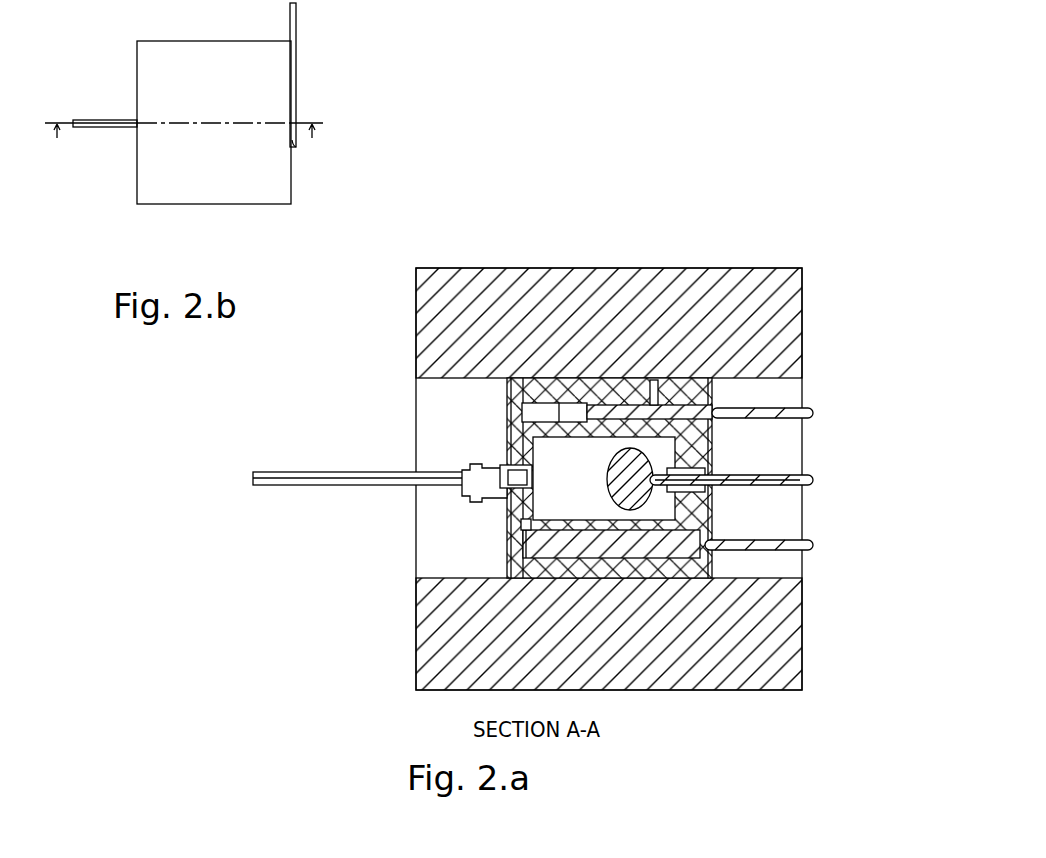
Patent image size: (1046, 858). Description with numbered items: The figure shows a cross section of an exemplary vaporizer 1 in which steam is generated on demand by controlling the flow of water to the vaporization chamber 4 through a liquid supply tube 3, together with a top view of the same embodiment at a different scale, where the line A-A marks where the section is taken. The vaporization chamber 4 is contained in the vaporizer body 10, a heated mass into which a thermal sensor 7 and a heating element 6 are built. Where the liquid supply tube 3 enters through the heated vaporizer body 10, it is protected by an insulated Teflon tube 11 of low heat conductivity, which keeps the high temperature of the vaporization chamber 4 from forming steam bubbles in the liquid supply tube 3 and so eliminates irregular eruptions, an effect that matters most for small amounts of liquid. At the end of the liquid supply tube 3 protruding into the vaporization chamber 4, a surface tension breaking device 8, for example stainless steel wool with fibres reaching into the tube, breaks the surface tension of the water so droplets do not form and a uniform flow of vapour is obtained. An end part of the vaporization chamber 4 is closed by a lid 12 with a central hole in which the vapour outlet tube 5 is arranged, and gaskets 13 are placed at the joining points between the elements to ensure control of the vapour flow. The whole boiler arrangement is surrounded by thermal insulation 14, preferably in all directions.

In FIG. 2.b, the vaporizer 1 is at (111, 35).
In FIG. 2.a, the vaporizer 1 is at (718, 229).
In FIG. 2.a, the liquid supply tube 3 is at (762, 470).
In FIG. 2.a, the vaporization chamber 4 is at (560, 455).
In FIG. 2.a, the vapour outlet tube 5 is at (342, 477).
In FIG. 2.a, the heating element 6 is at (625, 543).
In FIG. 2.a, the thermal sensor 7 is at (682, 398).
In FIG. 2.a, the surface tension breaking device 8 is at (630, 455).
In FIG. 2.a, the vaporizer body 10 is at (590, 397).
In FIG. 2.a, the insulated Teflon tube 11 is at (720, 412).
In FIG. 2.a, the lid 12 is at (507, 394).
In FIG. 2.a, the gaskets 13 is at (712, 537).
In FIG. 2.a, the thermal insulation 14 is at (505, 298).